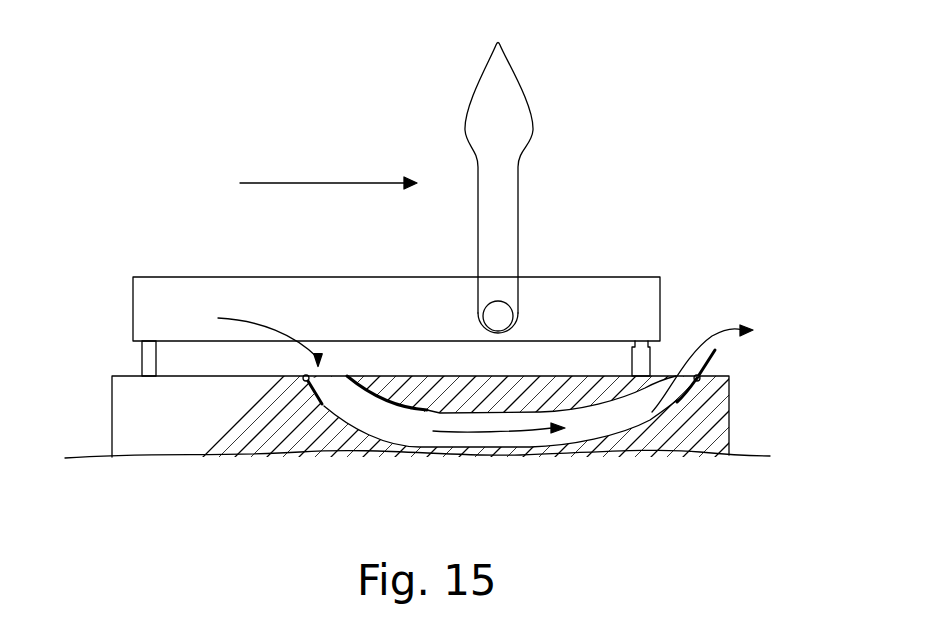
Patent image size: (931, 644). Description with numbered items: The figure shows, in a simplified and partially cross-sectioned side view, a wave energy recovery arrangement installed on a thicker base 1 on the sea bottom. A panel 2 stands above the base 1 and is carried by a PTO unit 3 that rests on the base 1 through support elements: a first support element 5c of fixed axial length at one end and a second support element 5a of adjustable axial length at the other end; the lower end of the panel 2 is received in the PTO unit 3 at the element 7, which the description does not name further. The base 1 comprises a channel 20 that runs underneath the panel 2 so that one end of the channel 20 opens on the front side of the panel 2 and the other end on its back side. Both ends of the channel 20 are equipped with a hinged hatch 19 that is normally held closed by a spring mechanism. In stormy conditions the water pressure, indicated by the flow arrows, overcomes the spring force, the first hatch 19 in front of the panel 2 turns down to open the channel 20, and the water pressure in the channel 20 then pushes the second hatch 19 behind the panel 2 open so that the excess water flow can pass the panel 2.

The base 1 is at (112, 425).
The panel 2 is at (507, 67).
The PTO unit 3 is at (593, 277).
The second support element 5a is at (650, 357).
The first support element 5c is at (142, 357).
The roller 7 is at (483, 317).
The hinged hatch 19 is at (306, 381).
The channel 20 is at (618, 455).